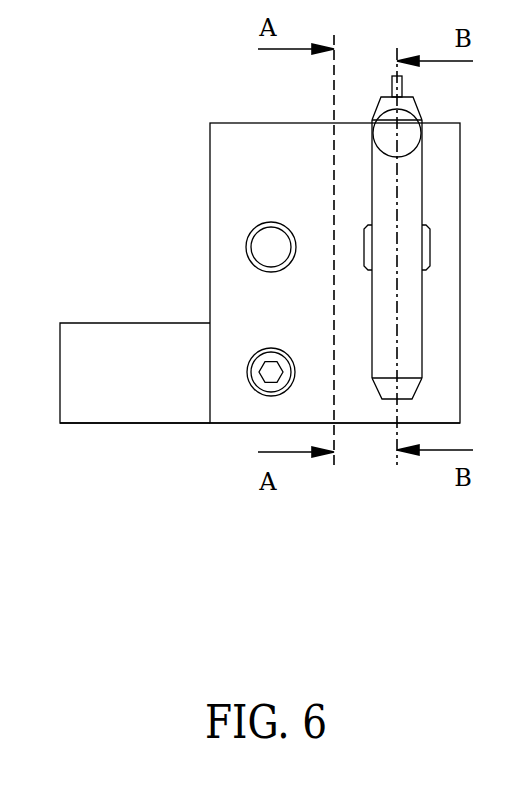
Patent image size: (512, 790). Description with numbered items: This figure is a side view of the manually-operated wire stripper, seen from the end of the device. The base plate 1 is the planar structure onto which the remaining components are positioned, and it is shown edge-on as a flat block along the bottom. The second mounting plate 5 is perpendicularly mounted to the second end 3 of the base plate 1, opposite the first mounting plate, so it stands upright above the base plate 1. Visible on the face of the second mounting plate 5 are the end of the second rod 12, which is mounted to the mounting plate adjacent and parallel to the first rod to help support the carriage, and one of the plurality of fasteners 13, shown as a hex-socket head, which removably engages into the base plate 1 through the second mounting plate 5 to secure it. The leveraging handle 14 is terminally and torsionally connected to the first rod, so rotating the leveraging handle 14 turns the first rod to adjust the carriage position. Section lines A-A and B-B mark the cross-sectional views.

The base plate 1 is at (130, 443).
The second end 3 is at (78, 360).
The second mounting plate 5 is at (240, 131).
The second rod 12 is at (272, 234).
The plurality of fasteners 13 is at (268, 354).
The leveraging handle 14 is at (405, 108).